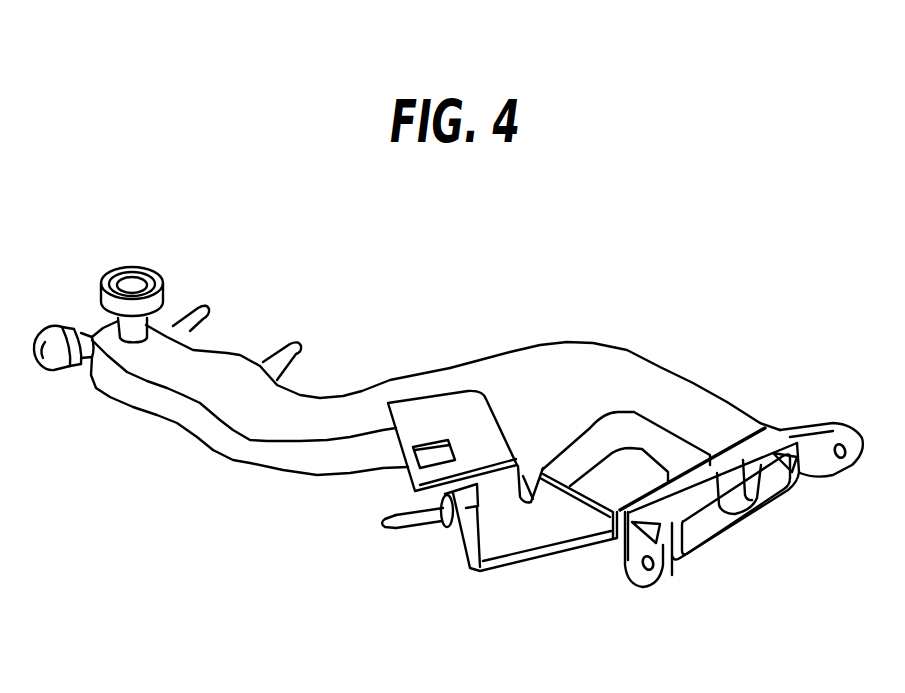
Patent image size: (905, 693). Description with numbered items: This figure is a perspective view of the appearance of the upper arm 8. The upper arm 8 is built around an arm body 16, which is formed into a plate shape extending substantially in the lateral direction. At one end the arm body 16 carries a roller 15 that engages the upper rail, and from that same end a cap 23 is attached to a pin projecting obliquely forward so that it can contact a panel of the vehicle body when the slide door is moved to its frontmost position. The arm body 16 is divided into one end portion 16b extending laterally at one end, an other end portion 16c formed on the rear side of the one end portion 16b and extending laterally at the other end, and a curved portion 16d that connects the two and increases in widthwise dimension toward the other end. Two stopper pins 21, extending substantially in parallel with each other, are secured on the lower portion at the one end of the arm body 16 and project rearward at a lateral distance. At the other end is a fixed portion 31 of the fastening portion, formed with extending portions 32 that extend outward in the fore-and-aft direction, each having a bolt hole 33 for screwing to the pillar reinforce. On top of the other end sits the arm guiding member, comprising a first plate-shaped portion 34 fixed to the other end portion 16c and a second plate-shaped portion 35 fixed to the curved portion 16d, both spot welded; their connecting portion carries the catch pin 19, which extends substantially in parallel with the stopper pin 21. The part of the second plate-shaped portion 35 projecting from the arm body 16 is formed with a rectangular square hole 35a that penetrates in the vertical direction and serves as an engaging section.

The upper arm 8 is at (90, 432).
The roller 15 is at (130, 285).
The arm body 16 is at (300, 420).
The one end portion 16b is at (150, 437).
The other end portion 16c is at (713, 331).
The curved portion 16d is at (369, 492).
The catch pin 19 is at (420, 522).
The stopper pin 21 is at (184, 323).
The cap 23 is at (42, 345).
The fixed portion 31 is at (704, 486).
The extending portion 32 is at (857, 428).
The bolt hole 33 is at (847, 462).
The first plate-shaped portion 34 is at (668, 444).
The second plate-shaped portion 35 is at (485, 413).
The square hole 35a is at (428, 446).